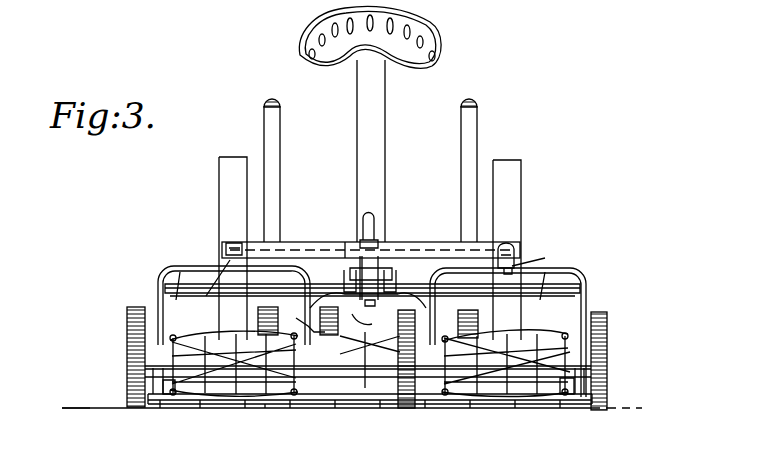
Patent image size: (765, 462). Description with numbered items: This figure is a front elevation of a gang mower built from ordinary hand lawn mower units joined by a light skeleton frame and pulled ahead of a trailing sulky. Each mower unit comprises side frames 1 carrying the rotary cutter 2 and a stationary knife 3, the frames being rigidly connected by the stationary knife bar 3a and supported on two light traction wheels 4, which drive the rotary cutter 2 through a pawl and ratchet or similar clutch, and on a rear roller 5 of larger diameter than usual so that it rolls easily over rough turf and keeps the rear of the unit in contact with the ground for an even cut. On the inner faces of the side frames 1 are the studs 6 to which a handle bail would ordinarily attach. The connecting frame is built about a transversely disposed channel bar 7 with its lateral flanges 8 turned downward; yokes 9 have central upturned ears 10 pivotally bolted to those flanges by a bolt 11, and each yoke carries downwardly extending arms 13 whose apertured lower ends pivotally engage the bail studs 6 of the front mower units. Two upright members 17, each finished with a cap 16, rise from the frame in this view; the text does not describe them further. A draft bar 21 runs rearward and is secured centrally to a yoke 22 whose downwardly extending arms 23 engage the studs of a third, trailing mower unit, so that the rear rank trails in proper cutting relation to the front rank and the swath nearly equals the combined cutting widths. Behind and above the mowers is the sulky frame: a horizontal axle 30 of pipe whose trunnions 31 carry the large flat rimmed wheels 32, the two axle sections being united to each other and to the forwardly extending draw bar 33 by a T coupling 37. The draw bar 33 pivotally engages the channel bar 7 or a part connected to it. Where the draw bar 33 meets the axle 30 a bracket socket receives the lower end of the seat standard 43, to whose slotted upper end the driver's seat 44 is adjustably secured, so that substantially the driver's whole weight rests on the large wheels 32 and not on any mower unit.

The rotary cutter 2 is at (208, 336).
The stationary knife 3 is at (186, 404).
The stationary knife bar 3a is at (168, 392).
The traction wheels 4 is at (135, 378).
The rear roller 5 is at (244, 406).
The studs 6 is at (140, 316).
The channel bar 7 is at (345, 242).
The lateral flanges 8 is at (300, 242).
The yokes 9 is at (358, 290).
The upturned ears 10 is at (383, 270).
The bolt 11 is at (228, 250).
The downwardly extending arms 13 is at (160, 292).
The post cap 16 is at (265, 100).
The post 17 is at (273, 166).
The draft bar 21 is at (382, 280).
The yoke 22 is at (368, 312).
The downwardly extending arms 23 is at (296, 318).
The horizontal axle 30 is at (340, 285).
The trunnions 31 is at (245, 435).
The wheels 32 is at (232, 190).
The draw bar 33 is at (374, 226).
The T coupling 37 is at (263, 431).
The seat standard 43 is at (367, 133).
The driver's seat 44 is at (412, 41).
The side frames 1 is at (459, 280).